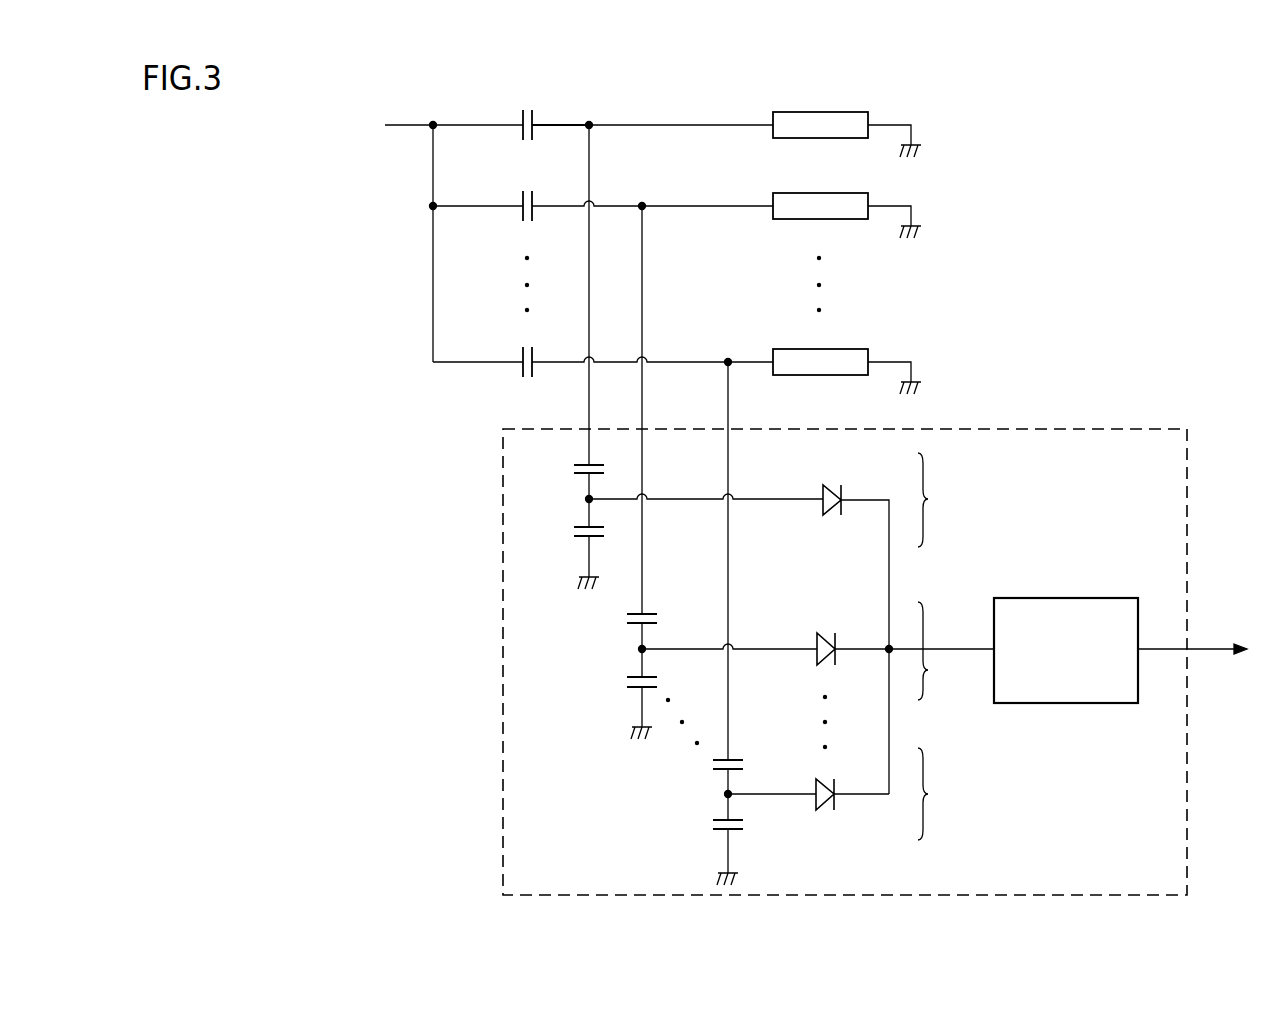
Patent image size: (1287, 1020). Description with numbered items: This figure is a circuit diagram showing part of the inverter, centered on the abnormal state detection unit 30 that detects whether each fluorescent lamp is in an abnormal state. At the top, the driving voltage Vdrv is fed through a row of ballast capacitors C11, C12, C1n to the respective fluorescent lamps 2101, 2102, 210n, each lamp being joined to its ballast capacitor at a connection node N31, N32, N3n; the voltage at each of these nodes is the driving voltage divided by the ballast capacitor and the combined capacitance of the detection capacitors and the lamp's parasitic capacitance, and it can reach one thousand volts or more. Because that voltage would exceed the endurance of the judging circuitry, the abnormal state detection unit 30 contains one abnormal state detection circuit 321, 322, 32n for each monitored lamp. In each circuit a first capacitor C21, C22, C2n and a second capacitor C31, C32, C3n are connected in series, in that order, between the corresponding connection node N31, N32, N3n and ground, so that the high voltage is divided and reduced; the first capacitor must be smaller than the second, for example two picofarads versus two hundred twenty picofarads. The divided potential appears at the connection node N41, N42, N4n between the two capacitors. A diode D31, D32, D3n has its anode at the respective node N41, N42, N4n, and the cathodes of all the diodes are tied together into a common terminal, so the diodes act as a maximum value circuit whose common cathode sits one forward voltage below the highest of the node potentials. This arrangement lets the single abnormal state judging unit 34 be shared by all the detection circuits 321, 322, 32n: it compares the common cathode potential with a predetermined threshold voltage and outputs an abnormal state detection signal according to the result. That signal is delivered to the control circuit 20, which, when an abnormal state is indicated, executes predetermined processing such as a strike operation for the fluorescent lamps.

The driving voltage Vdrv is at (428, 238).
The ballast capacitor C11 is at (520, 108).
The ballast capacitor C12 is at (520, 189).
The ballast capacitor C1n is at (520, 346).
The connection node N31 is at (673, 282).
The connection node N32 is at (700, 398).
The connection node N3n is at (742, 548).
The fluorescent lamp 2101 is at (841, 111).
The fluorescent lamp 2102 is at (841, 193).
The fluorescent lamp 210n is at (841, 349).
The abnormal state detection unit 30 is at (1077, 428).
The first capacitor C21 is at (570, 480).
The connection node N41 is at (688, 500).
The second capacitor C31 is at (570, 544).
The diode D31 is at (856, 627).
The abnormal state detection circuit 321 is at (942, 500).
The first capacitor C22 is at (623, 630).
The connection node N42 is at (708, 650).
The second capacitor C32 is at (623, 694).
The diode D32 is at (905, 638).
The abnormal state detection circuit 322 is at (941, 651).
The first capacitor C2n is at (707, 775).
The connection node N4n is at (751, 795).
The second capacitor C3n is at (707, 839).
The diode D3n is at (852, 784).
The abnormal state detection circuit 32n is at (940, 794).
The abnormal state judging unit 34 is at (1061, 704).
The control circuit 20 is at (1207, 650).